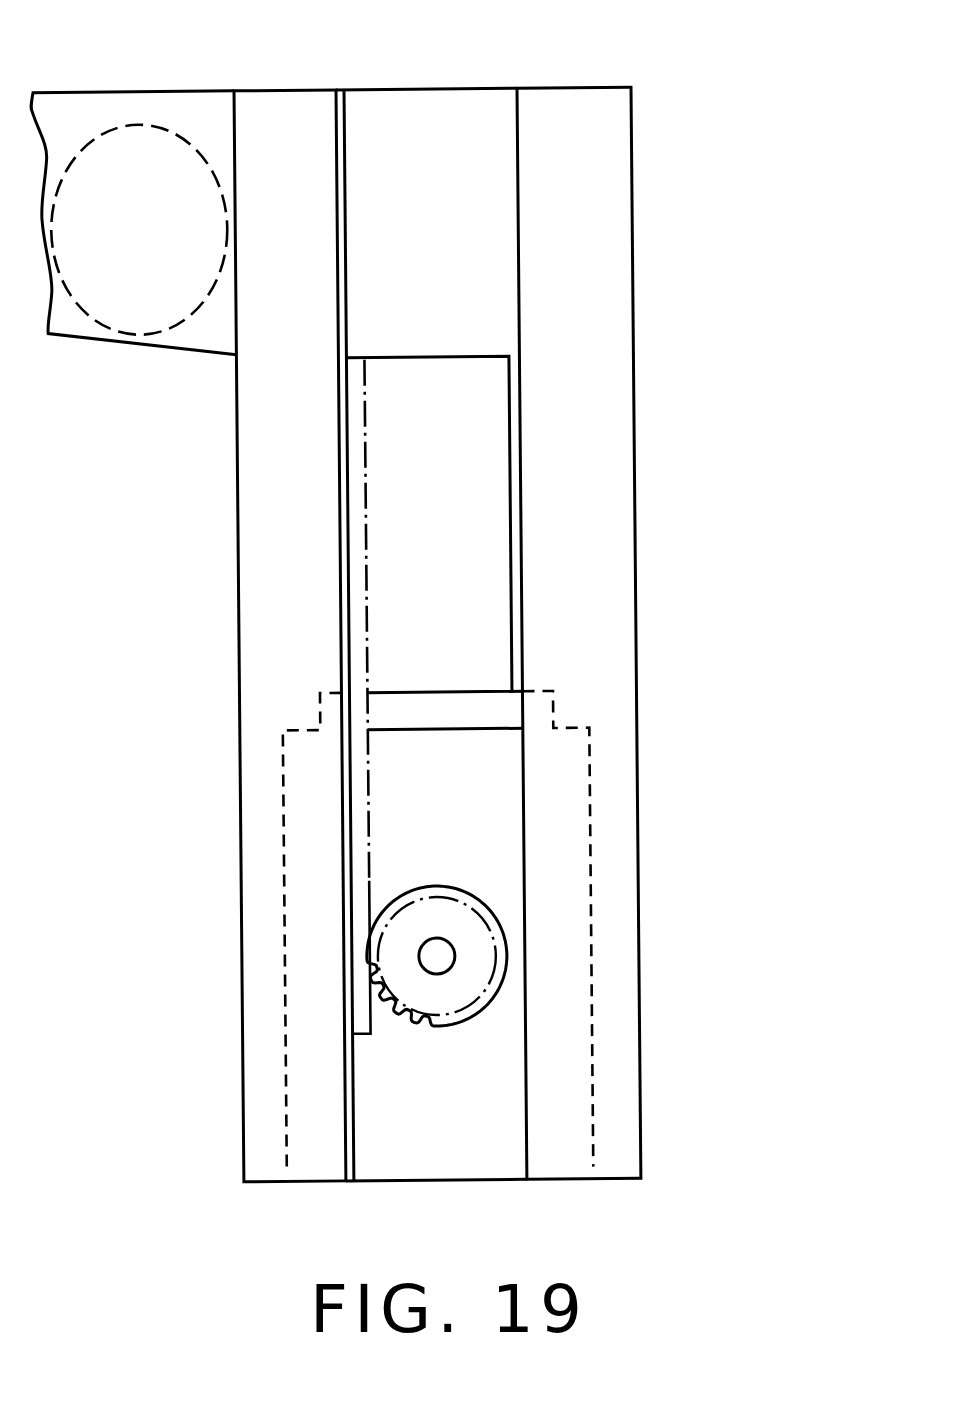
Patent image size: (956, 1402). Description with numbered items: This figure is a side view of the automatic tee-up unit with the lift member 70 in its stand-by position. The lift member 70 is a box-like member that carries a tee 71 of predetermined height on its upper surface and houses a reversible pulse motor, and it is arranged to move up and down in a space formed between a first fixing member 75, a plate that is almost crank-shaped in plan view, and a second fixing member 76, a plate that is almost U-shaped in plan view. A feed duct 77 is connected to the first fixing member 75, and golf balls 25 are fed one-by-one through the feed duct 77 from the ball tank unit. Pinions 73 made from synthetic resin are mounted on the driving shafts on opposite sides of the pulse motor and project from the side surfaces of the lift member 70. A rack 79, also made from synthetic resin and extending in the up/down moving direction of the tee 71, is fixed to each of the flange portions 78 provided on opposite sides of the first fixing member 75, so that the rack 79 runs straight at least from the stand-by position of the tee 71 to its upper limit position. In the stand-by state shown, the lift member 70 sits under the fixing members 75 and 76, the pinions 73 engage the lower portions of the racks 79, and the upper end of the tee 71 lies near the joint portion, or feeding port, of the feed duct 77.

The golf ball 25 is at (113, 307).
The lift member 70 is at (590, 810).
The tee 71 is at (478, 452).
The pinion 73 is at (420, 993).
The first fixing member 75 is at (252, 562).
The second fixing member 76 is at (585, 592).
The feed duct 77 is at (150, 100).
The flange portion 78 is at (354, 1093).
The rack 79 is at (353, 807).